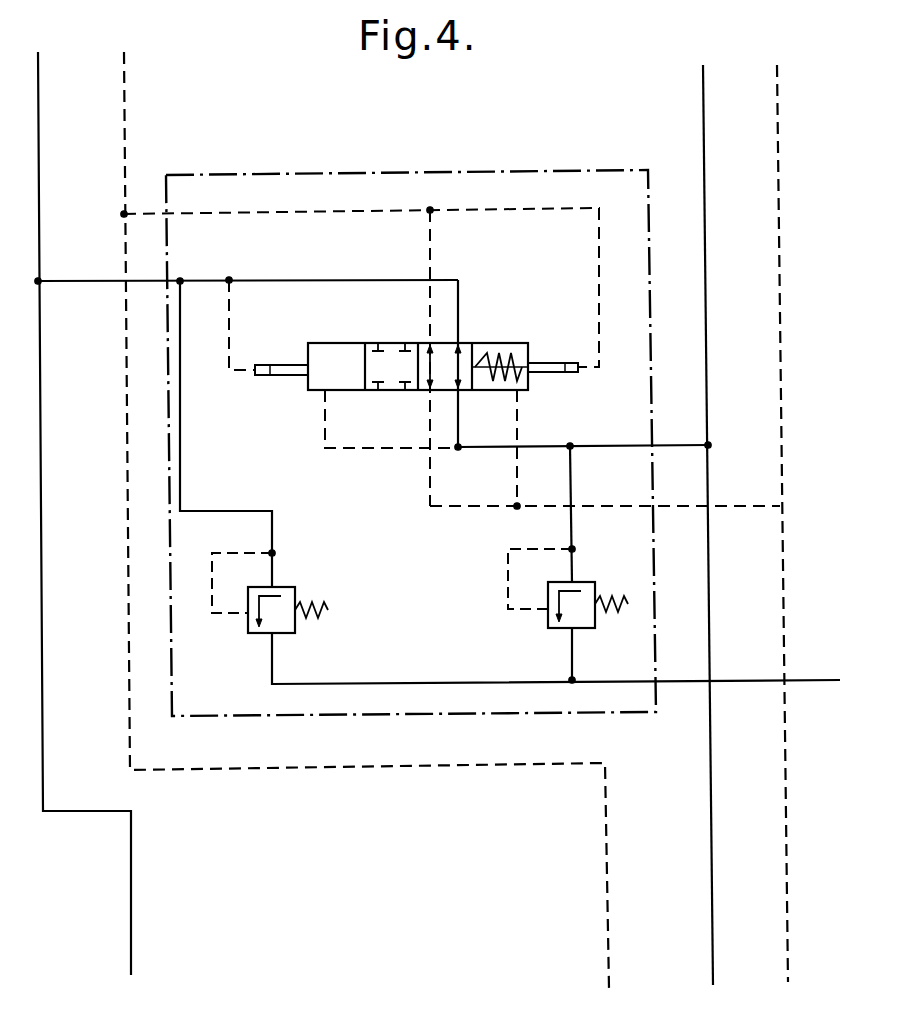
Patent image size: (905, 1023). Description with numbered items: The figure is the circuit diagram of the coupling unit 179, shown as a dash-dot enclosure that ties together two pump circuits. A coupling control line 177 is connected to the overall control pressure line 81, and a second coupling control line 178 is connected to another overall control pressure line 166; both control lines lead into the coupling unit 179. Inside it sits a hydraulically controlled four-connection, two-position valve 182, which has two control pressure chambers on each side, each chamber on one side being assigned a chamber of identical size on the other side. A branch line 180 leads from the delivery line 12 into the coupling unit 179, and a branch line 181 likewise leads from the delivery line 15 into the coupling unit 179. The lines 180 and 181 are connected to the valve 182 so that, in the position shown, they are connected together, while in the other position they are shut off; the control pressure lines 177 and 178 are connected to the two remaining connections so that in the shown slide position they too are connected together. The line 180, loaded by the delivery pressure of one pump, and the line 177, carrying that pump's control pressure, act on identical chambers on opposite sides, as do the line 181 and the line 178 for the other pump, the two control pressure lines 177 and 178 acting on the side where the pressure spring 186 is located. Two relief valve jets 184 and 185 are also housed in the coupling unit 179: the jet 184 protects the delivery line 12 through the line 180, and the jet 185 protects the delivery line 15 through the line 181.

The delivery line 12 is at (40, 115).
The overall control pressure line 81 is at (127, 115).
The delivery line 15 is at (705, 138).
The pilot line 166 is at (779, 160).
The coupling unit 179 is at (500, 172).
The coupling control line 177 is at (314, 218).
The branch line 180 is at (98, 280).
The 4-connection/2-position valve 182 is at (365, 343).
The pressure spring 186 is at (500, 352).
The branch line 181 is at (638, 445).
The coupling control line 178 is at (735, 510).
The relief valve jet 184 is at (288, 590).
The relief valve jet 185 is at (553, 624).